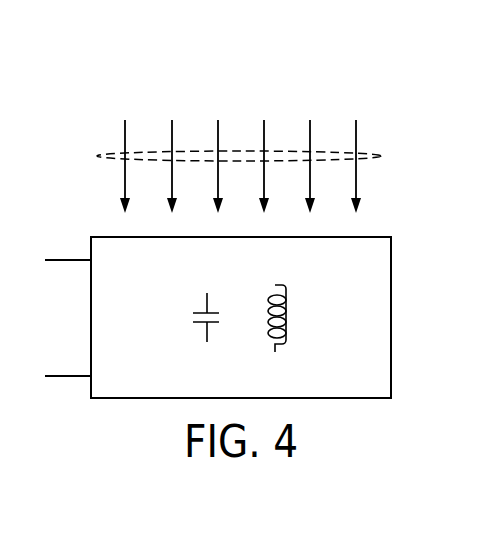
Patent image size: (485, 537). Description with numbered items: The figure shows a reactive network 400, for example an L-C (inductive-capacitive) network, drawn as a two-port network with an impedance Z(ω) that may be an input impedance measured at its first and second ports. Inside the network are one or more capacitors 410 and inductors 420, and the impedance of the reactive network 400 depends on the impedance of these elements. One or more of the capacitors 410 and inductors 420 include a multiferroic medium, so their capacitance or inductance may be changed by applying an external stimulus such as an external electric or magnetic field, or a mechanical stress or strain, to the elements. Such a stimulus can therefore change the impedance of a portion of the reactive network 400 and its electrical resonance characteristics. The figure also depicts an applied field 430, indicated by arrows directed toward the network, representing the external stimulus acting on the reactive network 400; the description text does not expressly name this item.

The reactive network 400 is at (132, 84).
The capacitor 410 is at (192, 318).
The inductor 420 is at (290, 318).
The incident electromagnetic wave front 430 is at (102, 155).